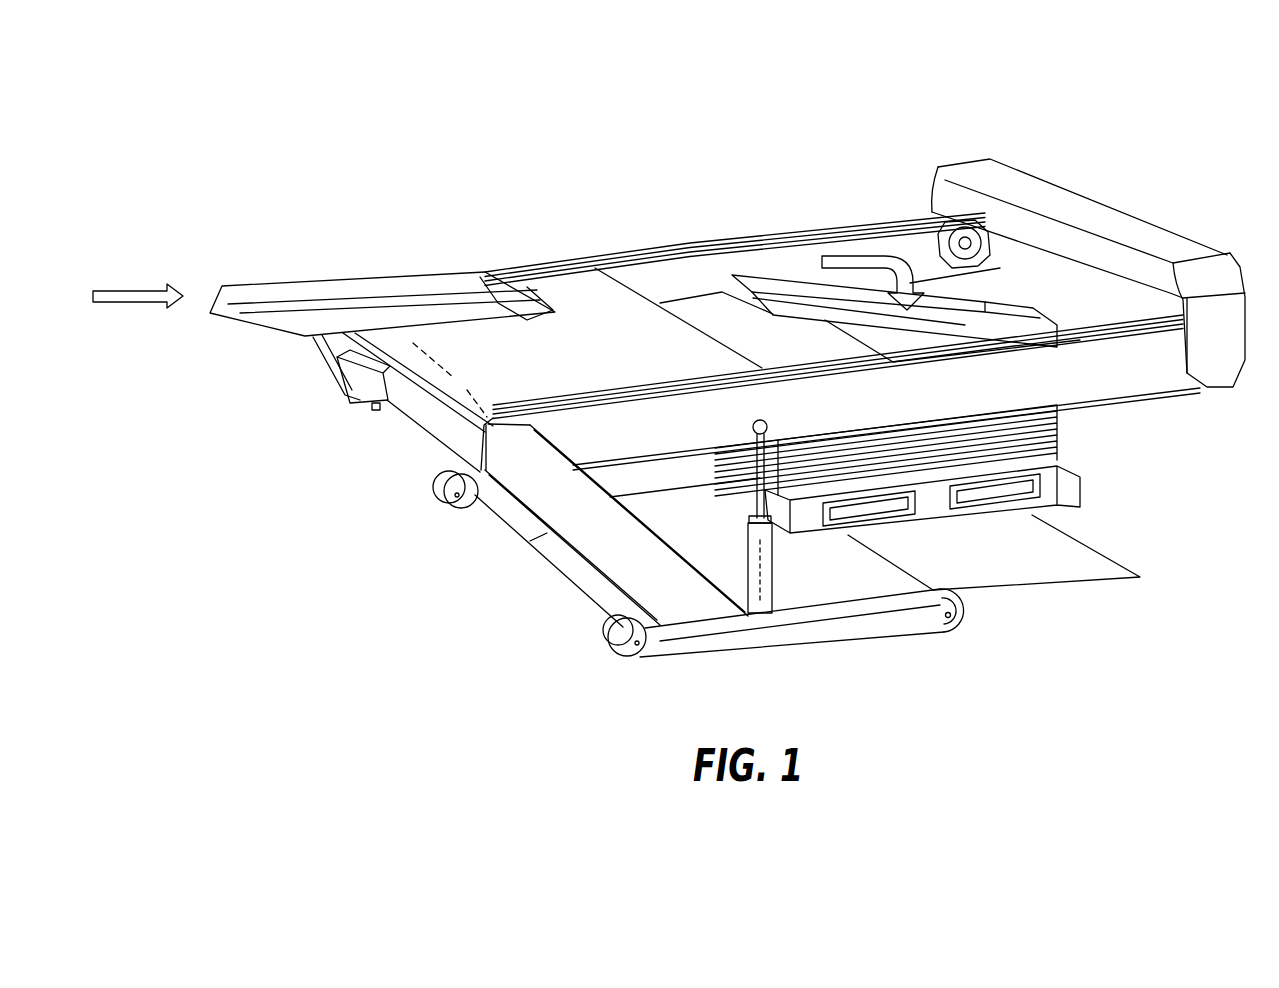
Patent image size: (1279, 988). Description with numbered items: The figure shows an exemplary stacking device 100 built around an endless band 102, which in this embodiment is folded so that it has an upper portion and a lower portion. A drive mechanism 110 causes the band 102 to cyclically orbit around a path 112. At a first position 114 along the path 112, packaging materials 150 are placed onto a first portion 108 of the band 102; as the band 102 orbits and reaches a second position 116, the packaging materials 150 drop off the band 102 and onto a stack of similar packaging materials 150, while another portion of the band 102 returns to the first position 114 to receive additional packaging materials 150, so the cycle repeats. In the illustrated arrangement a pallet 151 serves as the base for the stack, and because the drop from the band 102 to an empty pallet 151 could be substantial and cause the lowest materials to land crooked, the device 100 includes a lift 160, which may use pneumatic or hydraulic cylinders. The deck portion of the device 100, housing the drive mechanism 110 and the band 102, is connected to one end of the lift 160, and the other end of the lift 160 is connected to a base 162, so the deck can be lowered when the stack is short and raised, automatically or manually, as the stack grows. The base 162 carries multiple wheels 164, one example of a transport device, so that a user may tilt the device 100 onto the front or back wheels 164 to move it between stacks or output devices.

The stacking device 100 is at (727, 365).
The endless band 102 is at (610, 297).
The first portion of band 108 is at (520, 283).
The drive mechanism 110 is at (1003, 240).
The path 112 is at (922, 213).
The first position 114 is at (468, 378).
The second position 116 is at (818, 357).
The packaging materials 150 is at (400, 290).
The pallet 151 is at (1063, 503).
The lift 160 is at (762, 547).
The base 162 is at (803, 633).
The wheels 164 is at (618, 633).